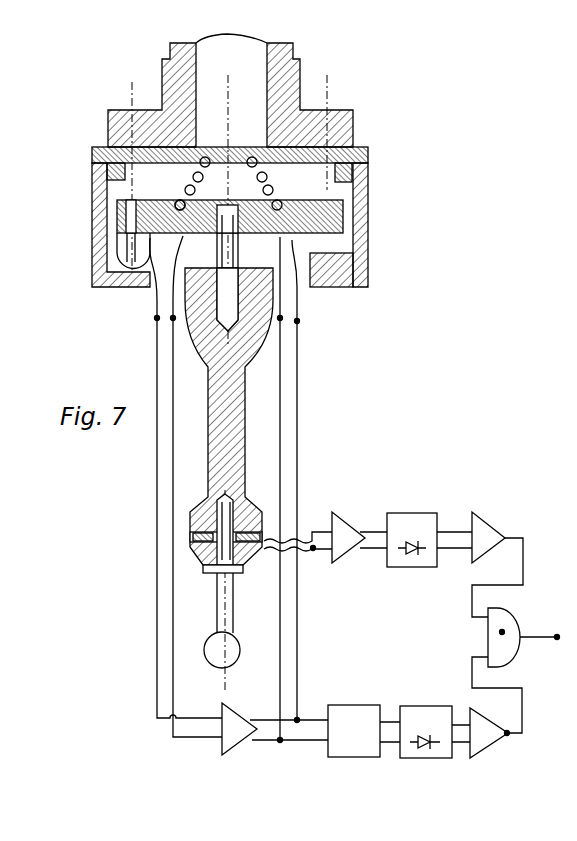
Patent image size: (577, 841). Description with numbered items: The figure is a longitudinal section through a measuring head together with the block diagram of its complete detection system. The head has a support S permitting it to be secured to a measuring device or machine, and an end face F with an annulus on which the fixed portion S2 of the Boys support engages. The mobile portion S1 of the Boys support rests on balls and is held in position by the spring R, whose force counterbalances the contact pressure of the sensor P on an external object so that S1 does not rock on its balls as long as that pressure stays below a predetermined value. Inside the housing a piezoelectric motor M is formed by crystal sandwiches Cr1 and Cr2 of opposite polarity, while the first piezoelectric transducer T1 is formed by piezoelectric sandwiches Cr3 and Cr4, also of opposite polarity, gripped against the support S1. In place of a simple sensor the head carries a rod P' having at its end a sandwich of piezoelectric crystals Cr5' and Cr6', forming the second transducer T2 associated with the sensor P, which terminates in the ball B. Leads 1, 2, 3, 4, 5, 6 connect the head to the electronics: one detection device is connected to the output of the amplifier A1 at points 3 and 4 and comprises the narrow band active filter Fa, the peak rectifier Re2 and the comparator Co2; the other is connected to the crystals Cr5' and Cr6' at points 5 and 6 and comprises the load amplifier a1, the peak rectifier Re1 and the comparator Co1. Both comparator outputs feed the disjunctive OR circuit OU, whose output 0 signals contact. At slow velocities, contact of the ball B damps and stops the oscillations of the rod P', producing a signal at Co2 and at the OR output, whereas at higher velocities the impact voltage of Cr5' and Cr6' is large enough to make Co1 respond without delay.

The support S is at (293, 88).
The end face F is at (370, 150).
The piezoelectric motor M is at (302, 288).
The mobile portion of the Boys support S1 is at (345, 207).
The fixed portion of the Boys support S2 is at (310, 258).
The spring R is at (265, 181).
The piezoelectric crystal sandwich Cr1 is at (354, 266).
The piezoelectric crystal sandwich Cr2 is at (310, 287).
The piezoelectric sandwich Cr3 is at (178, 203).
The piezoelectric sandwich Cr4 is at (152, 279).
The first piezoelectric transducer T1 is at (180, 290).
The rod P' is at (270, 420).
The piezoelectric crystal Cr5' is at (154, 513).
The piezoelectric crystal Cr6' is at (174, 553).
The second piezoelectric transducer T2 is at (262, 548).
The sensor P is at (286, 604).
The ball B is at (231, 661).
The wire 1 is at (197, 518).
The wire 2 is at (181, 509).
The point 3 is at (303, 481).
The point 4 is at (273, 499).
The point 5 is at (298, 528).
The point 6 is at (298, 557).
The load amplifier a1 is at (359, 537).
The peak rectifier Re1 is at (429, 540).
The comparator Co1 is at (497, 564).
The disjunctive logic circuit OU is at (502, 633).
The output 0 is at (540, 652).
The amplifier A1 is at (275, 729).
The narrow band active filter Fa is at (364, 731).
The peak rectifier Re2 is at (435, 732).
The comparator Co2 is at (490, 733).